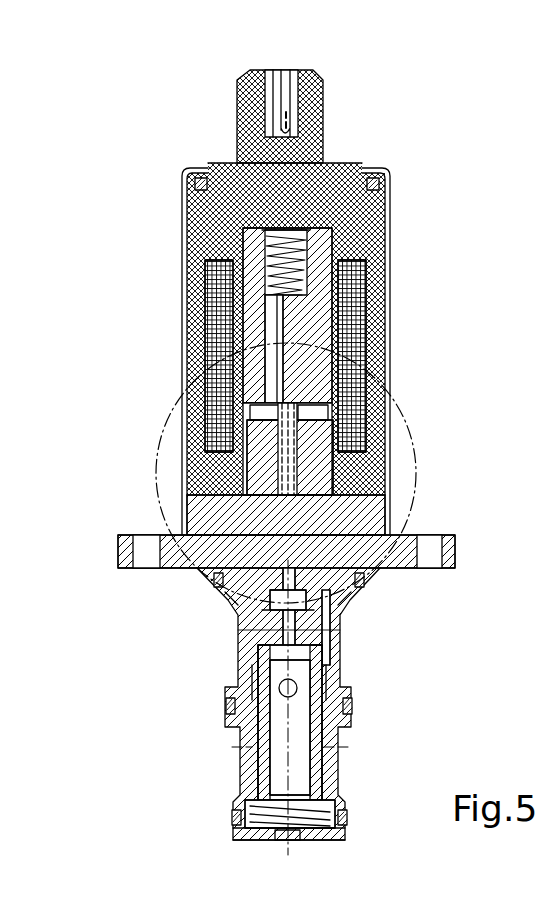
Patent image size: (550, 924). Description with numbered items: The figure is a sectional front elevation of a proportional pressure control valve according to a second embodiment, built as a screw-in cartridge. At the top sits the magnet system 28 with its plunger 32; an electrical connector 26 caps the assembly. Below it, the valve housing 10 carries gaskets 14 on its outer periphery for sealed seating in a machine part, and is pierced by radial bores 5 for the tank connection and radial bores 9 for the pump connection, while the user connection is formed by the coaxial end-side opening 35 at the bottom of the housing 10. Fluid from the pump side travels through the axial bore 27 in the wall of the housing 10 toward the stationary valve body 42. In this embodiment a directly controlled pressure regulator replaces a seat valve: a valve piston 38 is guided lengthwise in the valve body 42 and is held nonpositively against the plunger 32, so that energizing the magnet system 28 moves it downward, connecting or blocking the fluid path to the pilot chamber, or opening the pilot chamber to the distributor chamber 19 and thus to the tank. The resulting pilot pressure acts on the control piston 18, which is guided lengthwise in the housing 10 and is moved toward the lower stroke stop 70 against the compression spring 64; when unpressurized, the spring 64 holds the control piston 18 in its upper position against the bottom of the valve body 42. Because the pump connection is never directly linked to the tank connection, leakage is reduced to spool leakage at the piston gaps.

The electrical connector plug 26 is at (283, 70).
The magnet system 28 is at (402, 168).
The plunger 32 is at (385, 353).
The distributor chamber 19 is at (250, 548).
The valve body 42 is at (212, 578).
The valve piston 38 is at (215, 592).
The valve housing 10 is at (238, 648).
The radial bores 5 is at (230, 667).
The control piston 18 is at (312, 632).
The axial bore 27 is at (312, 662).
The gaskets 14 is at (345, 706).
The radial bores 9 is at (330, 745).
The compression spring 64 is at (258, 805).
The lower stroke stop 70 is at (245, 847).
The end-side opening 35 is at (330, 842).